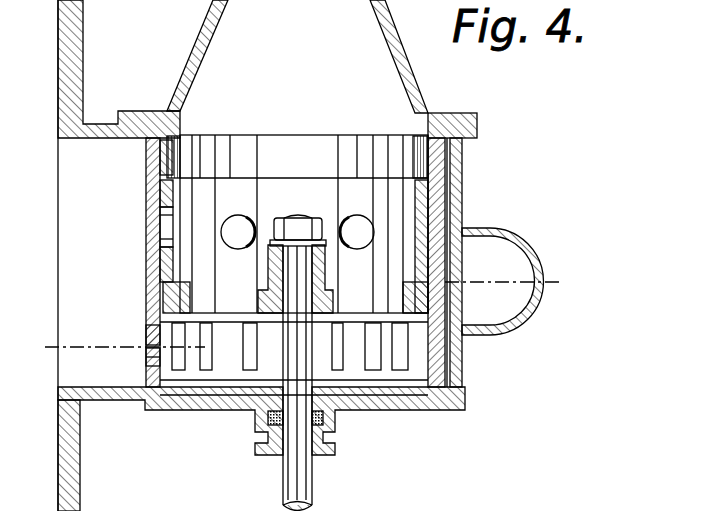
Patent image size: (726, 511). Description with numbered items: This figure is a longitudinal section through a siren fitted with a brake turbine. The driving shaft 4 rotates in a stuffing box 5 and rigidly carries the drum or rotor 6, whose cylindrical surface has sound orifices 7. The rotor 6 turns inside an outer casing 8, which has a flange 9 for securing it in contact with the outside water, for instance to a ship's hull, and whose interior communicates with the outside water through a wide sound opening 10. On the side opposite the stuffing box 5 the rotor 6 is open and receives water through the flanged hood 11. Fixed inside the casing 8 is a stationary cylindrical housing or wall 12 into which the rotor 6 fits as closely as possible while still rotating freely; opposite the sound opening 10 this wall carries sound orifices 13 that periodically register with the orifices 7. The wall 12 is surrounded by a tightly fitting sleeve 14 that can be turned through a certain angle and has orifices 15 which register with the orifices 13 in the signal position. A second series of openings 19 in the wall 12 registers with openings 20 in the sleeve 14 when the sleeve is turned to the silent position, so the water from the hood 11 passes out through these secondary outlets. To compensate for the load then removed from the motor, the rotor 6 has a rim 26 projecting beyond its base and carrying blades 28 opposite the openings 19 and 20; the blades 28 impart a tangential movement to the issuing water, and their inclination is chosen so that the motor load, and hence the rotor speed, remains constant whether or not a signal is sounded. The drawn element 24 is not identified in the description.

The driving shaft 4 is at (290, 460).
The stuffing box 5 is at (345, 472).
The drum or rotor 6 is at (295, 224).
The sound orifices 7 is at (240, 228).
The outer casing 8 is at (186, 406).
The flange 9 is at (72, 466).
The sound opening 10 is at (60, 262).
The hood 11 is at (297, 56).
The stationary cylindrical housing or wall 12 is at (158, 278).
The sound orifices 13 is at (160, 222).
The sleeve 14 is at (442, 263).
The orifices 15 is at (152, 232).
The openings 19 is at (156, 352).
The openings 20 is at (148, 336).
The hub right part 24 is at (372, 298).
The rim 26 is at (198, 288).
The blades 28 is at (250, 372).